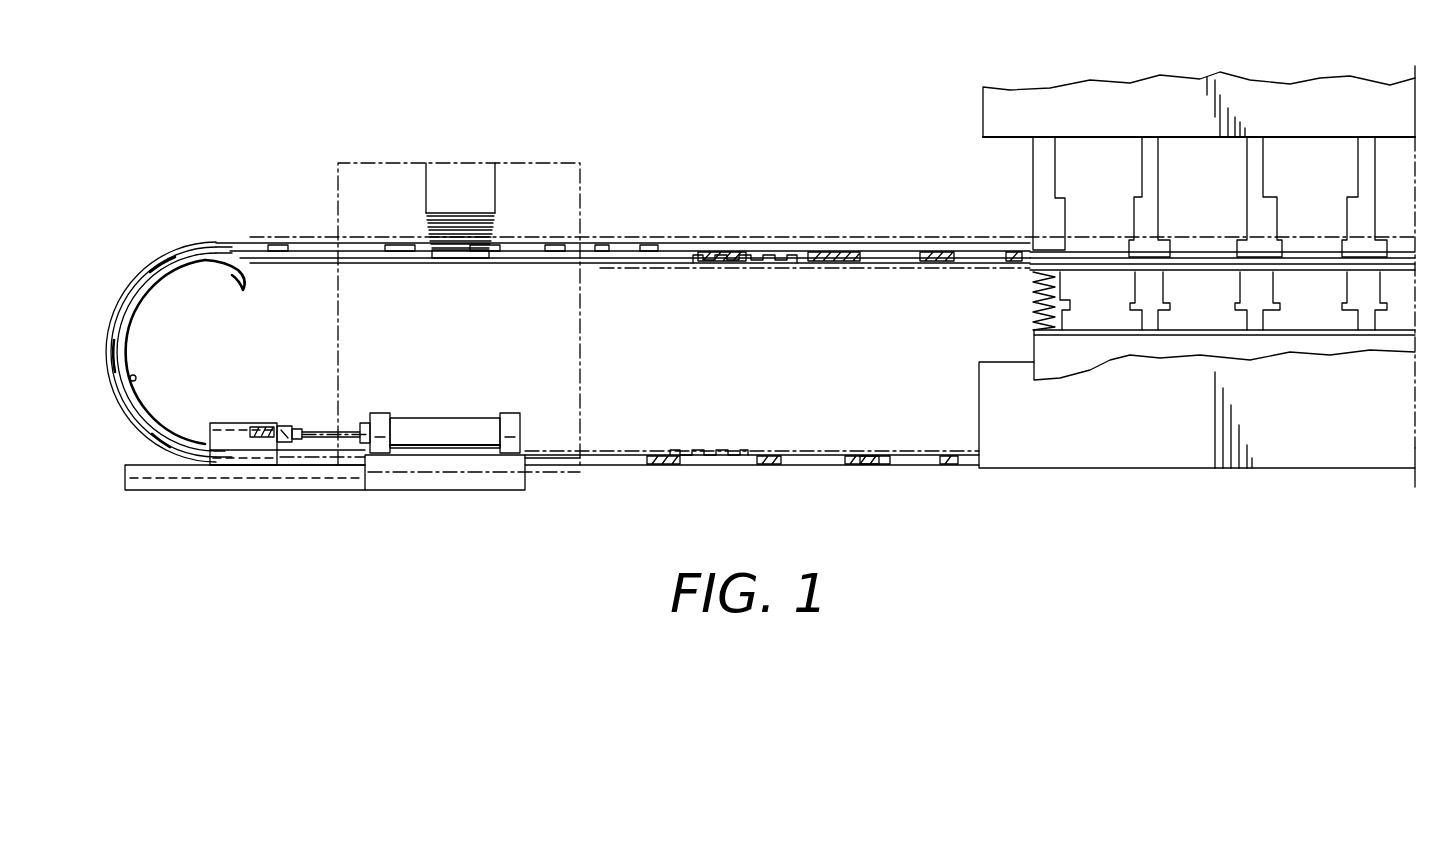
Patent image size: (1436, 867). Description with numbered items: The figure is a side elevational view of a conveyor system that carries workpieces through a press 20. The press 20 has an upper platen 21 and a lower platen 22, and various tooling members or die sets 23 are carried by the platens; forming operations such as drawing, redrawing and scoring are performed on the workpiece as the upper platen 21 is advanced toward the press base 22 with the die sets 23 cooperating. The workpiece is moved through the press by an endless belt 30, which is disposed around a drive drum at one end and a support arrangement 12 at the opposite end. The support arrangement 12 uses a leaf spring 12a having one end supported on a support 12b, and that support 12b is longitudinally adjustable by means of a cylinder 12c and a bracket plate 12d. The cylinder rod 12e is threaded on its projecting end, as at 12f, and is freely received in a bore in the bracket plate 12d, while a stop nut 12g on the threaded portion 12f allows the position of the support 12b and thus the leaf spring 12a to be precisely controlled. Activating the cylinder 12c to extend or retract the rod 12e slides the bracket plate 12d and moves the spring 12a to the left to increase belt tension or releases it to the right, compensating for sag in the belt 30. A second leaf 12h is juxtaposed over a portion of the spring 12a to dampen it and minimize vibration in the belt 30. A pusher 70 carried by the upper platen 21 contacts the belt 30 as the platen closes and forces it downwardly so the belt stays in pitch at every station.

The support arrangement 12 is at (130, 443).
The leaf spring 12a is at (197, 264).
The support 12b is at (182, 488).
The cylinder 12c is at (430, 425).
The bracket plate 12d is at (209, 426).
The cylinder rod 12e is at (322, 432).
The threaded portion 12f is at (290, 434).
The stop nut 12g is at (282, 438).
The second leaf 12h is at (135, 380).
The press 20 is at (965, 109).
The upper platen 21 is at (997, 122).
The lower platen 22 is at (987, 398).
The die sets 23 is at (1040, 180).
The endless belt 30 is at (628, 466).
The pusher 70 is at (1058, 249).